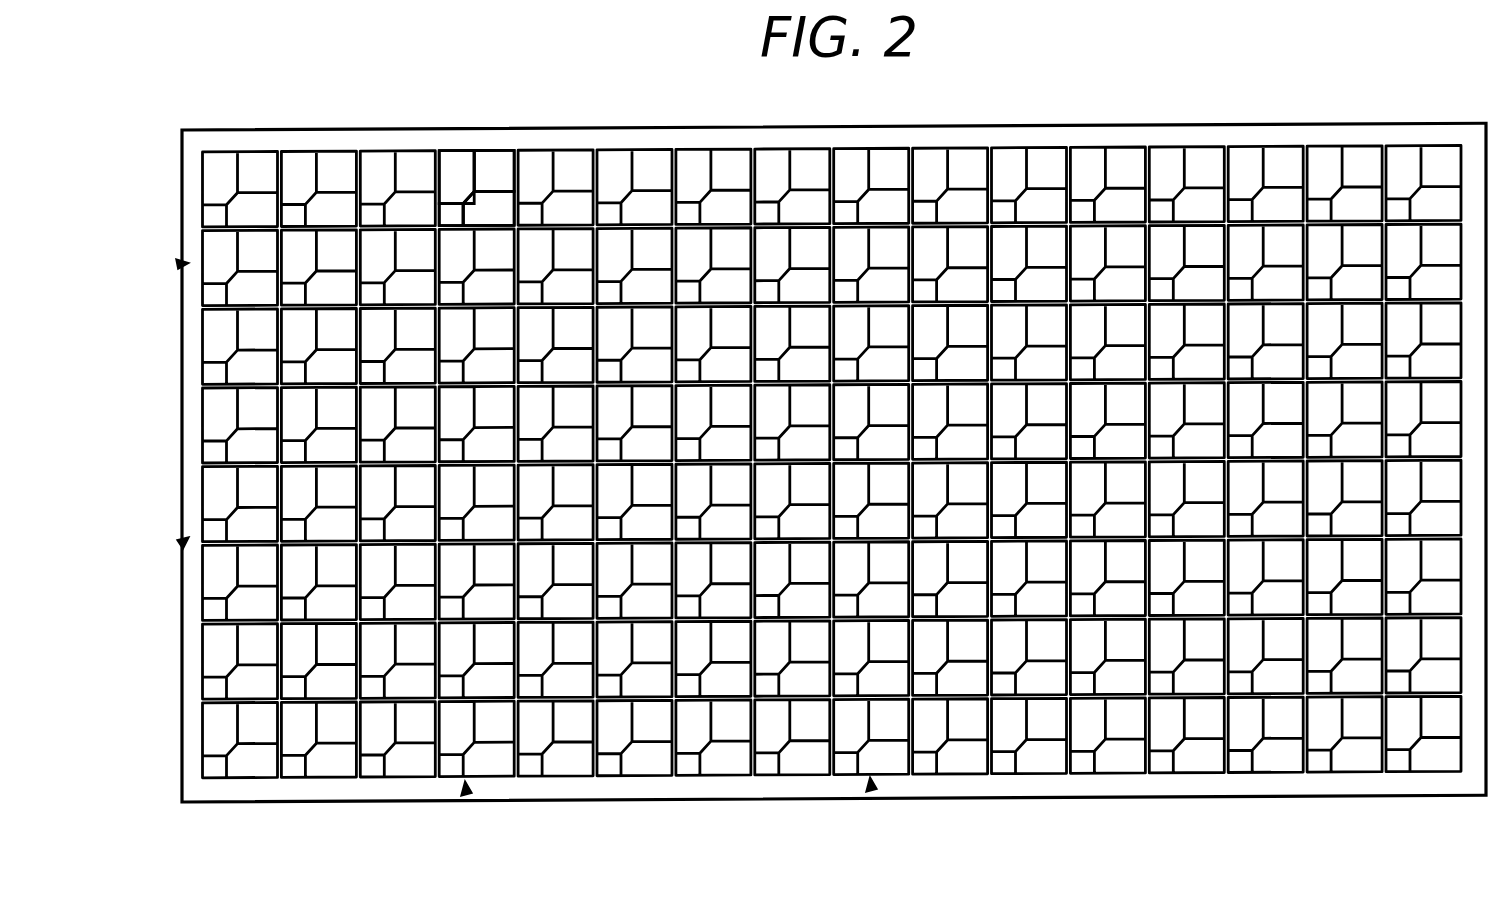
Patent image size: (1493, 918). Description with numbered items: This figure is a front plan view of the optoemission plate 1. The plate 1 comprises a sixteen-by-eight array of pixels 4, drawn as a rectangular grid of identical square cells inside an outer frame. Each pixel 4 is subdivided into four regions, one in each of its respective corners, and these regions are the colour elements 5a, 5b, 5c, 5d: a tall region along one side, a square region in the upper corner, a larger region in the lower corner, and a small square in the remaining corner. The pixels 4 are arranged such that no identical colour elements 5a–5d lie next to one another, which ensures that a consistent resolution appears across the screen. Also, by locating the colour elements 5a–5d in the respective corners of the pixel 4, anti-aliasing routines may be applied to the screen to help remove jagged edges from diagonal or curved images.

The optoemission plate 1 is at (938, 88).
The pixel 4 is at (180, 265).
The colour element 5a is at (497, 168).
The colour element 5b is at (502, 168).
The colour element 5c is at (500, 210).
The colour element 5d is at (455, 212).